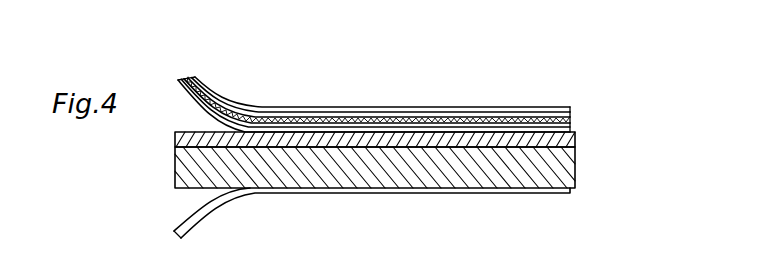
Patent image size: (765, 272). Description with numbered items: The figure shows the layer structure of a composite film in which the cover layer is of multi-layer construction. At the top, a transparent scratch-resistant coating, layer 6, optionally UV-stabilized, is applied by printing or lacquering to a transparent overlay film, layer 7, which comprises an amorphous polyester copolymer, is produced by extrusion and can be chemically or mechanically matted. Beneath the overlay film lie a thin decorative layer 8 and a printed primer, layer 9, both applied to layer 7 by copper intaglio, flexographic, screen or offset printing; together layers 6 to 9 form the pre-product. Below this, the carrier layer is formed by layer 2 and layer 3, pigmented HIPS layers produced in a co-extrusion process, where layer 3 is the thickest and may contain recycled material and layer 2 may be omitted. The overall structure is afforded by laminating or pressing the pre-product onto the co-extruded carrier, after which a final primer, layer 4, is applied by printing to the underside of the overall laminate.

The layer 2 (HIPS carrier layer) 2 is at (576, 137).
The layer 3 (HIPS carrier layer) 3 is at (562, 170).
The layer 4 (primer) 4 is at (550, 192).
The layer 6 (transparent scratch-resistant coating) 6 is at (500, 108).
The layer 7 (transparent overlay film) 7 is at (542, 113).
The layer 8 (decorative layer) 8 is at (571, 117).
The layer 9 (primer) 9 is at (571, 127).